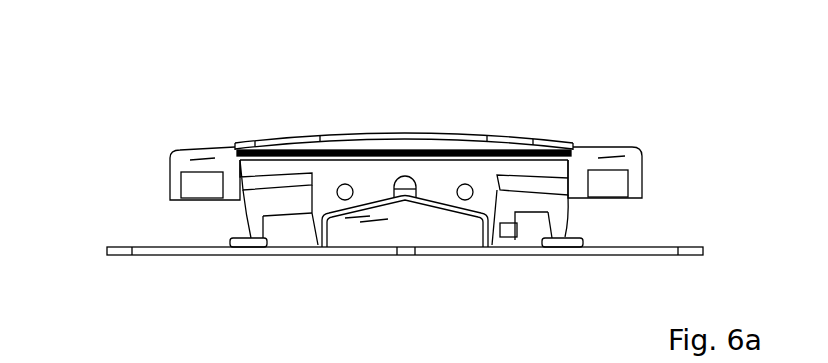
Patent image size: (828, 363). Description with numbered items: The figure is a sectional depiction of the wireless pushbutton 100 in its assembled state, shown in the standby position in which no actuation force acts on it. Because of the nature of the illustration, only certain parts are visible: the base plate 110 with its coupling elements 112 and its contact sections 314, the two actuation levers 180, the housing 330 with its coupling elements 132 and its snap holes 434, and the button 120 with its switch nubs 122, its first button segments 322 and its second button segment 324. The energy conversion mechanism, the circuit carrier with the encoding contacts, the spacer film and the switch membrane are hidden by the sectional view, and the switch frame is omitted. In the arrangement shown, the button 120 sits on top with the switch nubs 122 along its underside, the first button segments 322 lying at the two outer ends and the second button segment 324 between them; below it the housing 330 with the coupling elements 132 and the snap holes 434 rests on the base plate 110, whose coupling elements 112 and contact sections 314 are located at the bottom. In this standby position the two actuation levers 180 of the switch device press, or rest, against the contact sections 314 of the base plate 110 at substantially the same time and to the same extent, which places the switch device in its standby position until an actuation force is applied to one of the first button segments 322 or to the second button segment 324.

The wireless pushbutton 100 is at (165, 118).
The base plate 110 is at (112, 256).
The coupling elements 112 is at (428, 232).
The button 120 is at (162, 164).
The switch nubs 122 is at (262, 146).
The coupling elements 132 is at (418, 178).
The actuation levers 180 is at (253, 212).
The contact sections 314 is at (238, 248).
The first button segments 322 is at (204, 160).
The second button segment 324 is at (340, 150).
The housing 330 is at (279, 182).
The snap holes 434 is at (463, 202).